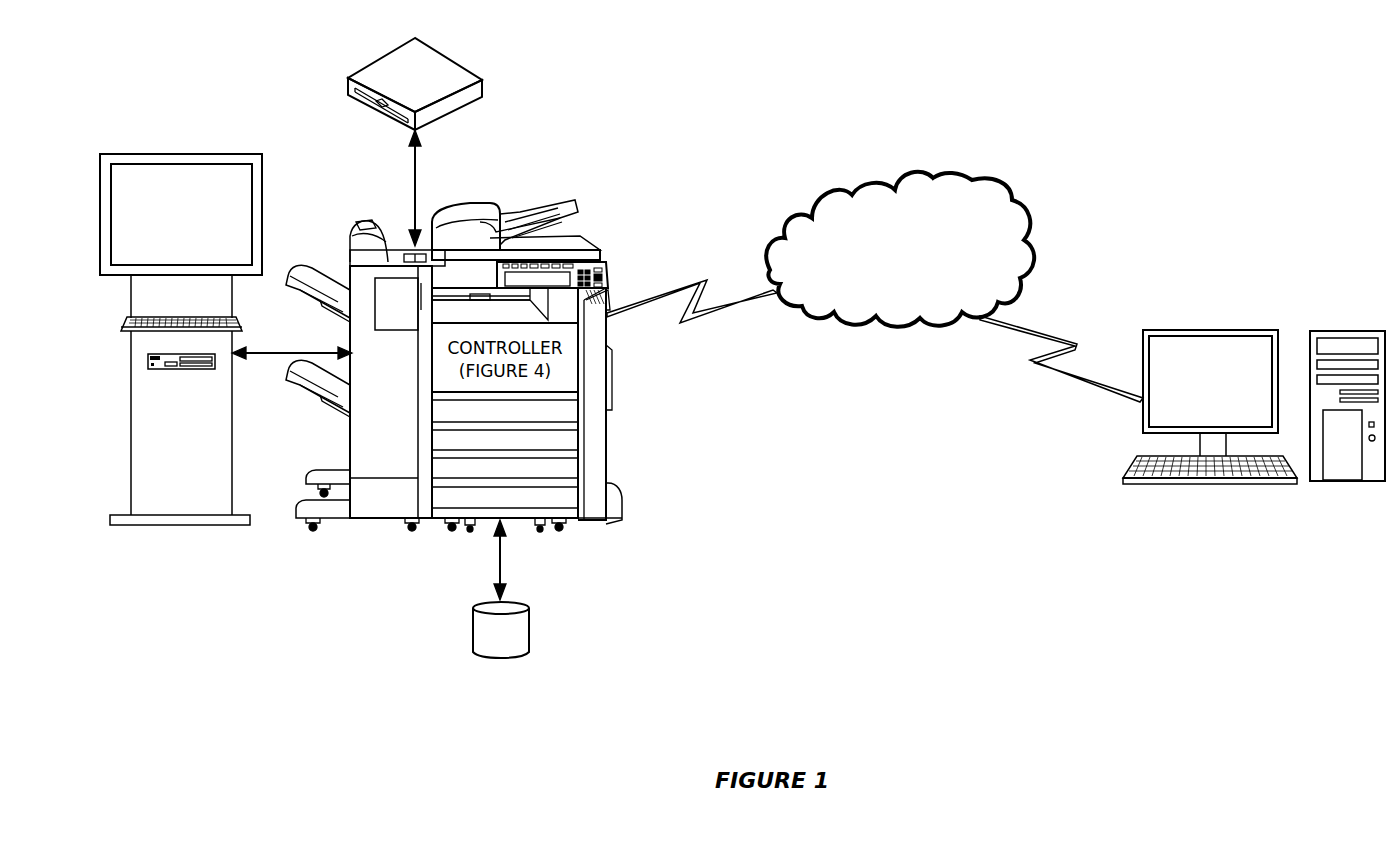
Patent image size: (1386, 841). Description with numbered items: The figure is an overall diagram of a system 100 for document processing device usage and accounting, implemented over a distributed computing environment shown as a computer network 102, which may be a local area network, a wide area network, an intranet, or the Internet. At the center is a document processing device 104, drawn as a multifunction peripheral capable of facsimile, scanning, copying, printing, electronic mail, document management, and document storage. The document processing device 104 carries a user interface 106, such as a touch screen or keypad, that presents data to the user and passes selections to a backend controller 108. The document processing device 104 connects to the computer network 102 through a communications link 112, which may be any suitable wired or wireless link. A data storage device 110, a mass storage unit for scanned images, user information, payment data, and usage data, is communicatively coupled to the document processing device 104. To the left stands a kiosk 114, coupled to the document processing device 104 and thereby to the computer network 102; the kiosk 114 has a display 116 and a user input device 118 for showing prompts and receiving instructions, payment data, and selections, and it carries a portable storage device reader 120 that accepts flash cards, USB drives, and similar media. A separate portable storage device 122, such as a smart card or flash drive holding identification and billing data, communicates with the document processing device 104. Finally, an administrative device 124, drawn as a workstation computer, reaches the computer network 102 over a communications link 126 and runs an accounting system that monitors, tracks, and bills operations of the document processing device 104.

The system 100 is at (698, 70).
The computer network 102 is at (956, 138).
The document processing device 104 is at (508, 205).
The user interface 106 is at (612, 272).
The controller 108 is at (565, 380).
The data storage device 110 is at (530, 613).
The communications link 112 is at (716, 285).
The kiosk 114 is at (146, 148).
The display 116 is at (236, 241).
The user input device 118 is at (130, 316).
The portable storage device reader 120 is at (148, 358).
The portable storage device 122 is at (445, 42).
The administrative device 124 is at (1228, 332).
The communications link 126 is at (1040, 330).